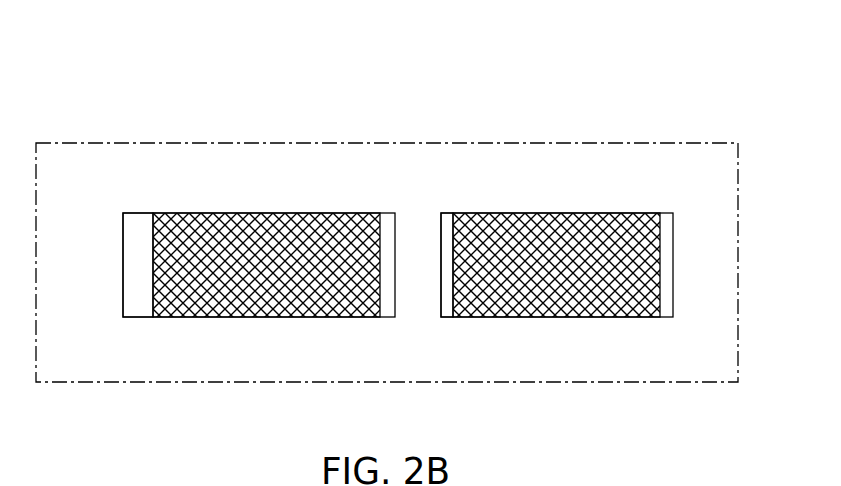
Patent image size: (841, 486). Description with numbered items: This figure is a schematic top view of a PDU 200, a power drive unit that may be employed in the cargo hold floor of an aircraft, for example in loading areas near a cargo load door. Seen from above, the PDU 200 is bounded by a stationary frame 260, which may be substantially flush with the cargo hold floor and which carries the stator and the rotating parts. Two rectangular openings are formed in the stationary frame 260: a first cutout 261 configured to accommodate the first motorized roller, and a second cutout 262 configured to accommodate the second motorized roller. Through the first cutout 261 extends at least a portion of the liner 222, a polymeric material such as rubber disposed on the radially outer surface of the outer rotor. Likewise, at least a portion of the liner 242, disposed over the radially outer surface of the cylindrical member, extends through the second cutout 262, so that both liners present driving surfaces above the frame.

The PDU 200 is at (387, 201).
The stationary frame 260 is at (677, 157).
The liner 222 is at (249, 267).
The liner 242 is at (545, 269).
The first cutout 261 is at (131, 318).
The second cutout 262 is at (449, 318).